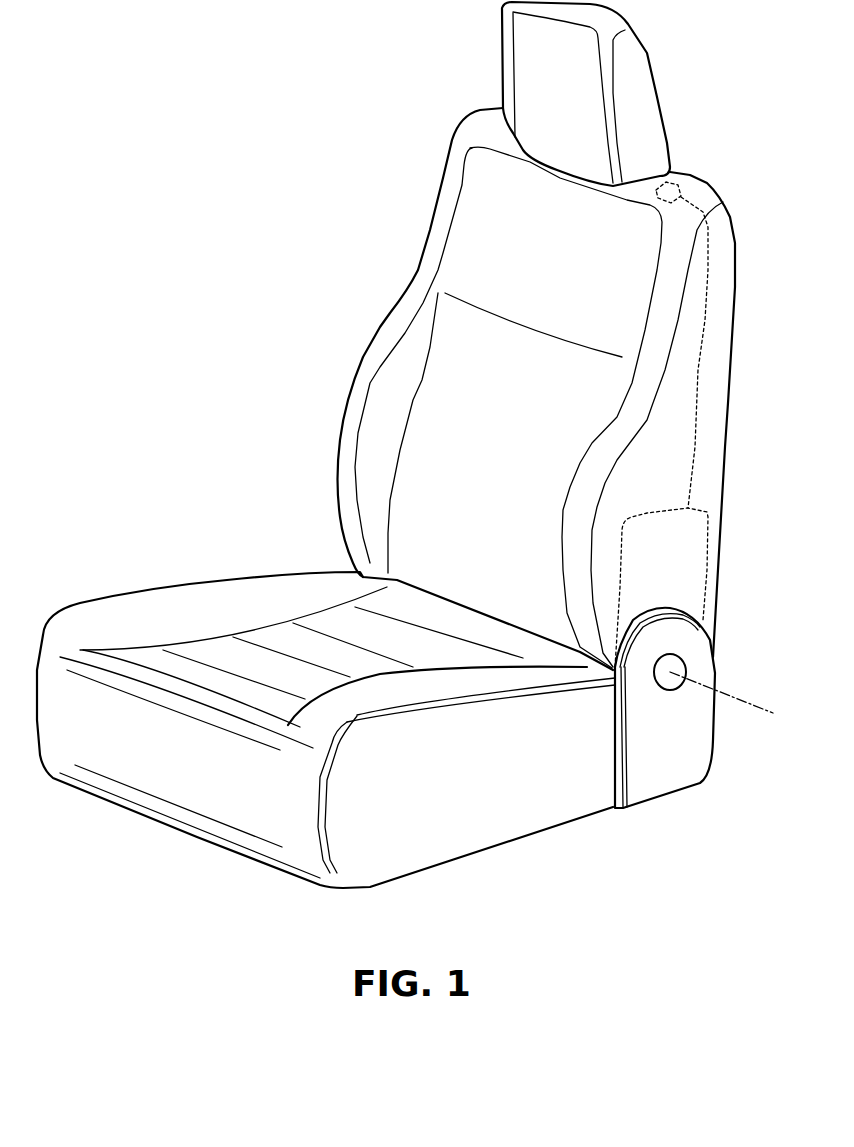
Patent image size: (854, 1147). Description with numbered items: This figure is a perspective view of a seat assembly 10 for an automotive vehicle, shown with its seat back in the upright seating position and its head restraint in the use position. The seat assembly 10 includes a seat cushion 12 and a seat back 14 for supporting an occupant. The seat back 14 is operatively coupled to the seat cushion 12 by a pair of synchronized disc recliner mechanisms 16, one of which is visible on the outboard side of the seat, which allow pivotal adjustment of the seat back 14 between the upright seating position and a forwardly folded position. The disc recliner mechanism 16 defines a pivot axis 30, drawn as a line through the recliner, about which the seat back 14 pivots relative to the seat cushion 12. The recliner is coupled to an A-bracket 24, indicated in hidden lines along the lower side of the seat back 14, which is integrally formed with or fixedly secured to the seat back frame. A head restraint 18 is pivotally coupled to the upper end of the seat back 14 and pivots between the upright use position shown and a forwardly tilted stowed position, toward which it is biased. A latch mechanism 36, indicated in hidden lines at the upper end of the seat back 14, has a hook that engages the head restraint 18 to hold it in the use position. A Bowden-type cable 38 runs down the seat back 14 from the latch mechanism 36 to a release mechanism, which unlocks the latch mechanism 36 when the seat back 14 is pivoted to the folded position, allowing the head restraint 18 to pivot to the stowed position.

The seat assembly 10 is at (338, 240).
The seat cushion 12 is at (178, 600).
The seat back 14 is at (465, 218).
The disc recliner mechanism 16 is at (680, 668).
The head restraint 18 is at (640, 94).
The A-bracket 24 is at (710, 547).
The pivot axis 30 is at (743, 700).
The latch mechanism 36 is at (680, 185).
The Bowden-type cable 38 is at (703, 322).